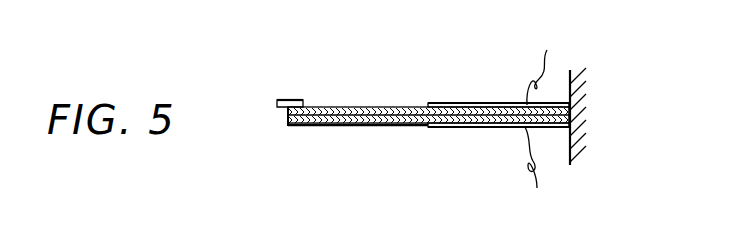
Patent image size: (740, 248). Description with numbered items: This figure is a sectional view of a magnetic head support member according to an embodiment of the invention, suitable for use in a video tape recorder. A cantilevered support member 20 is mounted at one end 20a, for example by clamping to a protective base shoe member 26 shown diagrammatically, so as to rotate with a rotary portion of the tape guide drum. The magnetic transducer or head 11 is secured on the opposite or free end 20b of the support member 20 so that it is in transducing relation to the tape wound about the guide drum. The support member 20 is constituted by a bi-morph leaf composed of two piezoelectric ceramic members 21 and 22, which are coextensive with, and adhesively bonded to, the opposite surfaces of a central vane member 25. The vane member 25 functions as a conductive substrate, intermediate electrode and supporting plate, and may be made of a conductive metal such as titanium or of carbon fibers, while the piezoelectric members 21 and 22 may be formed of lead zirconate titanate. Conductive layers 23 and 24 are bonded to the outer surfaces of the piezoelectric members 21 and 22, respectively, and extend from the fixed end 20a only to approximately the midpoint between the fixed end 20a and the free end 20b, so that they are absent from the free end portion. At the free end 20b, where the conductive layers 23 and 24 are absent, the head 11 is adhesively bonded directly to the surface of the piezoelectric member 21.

The cantilevered support member 20 is at (430, 82).
The piezoelectric ceramic member 21 is at (383, 108).
The central vane member 25 is at (328, 108).
The piezoelectric ceramic member 22 is at (383, 124).
The magnetic transducer or head 11 is at (277, 101).
The conductive layer 23 is at (480, 103).
The conductive layer 24 is at (470, 127).
The free end of support member 20b is at (288, 115).
The fixed end of support member 20a is at (570, 112).
The protective base shoe member 26 is at (578, 101).